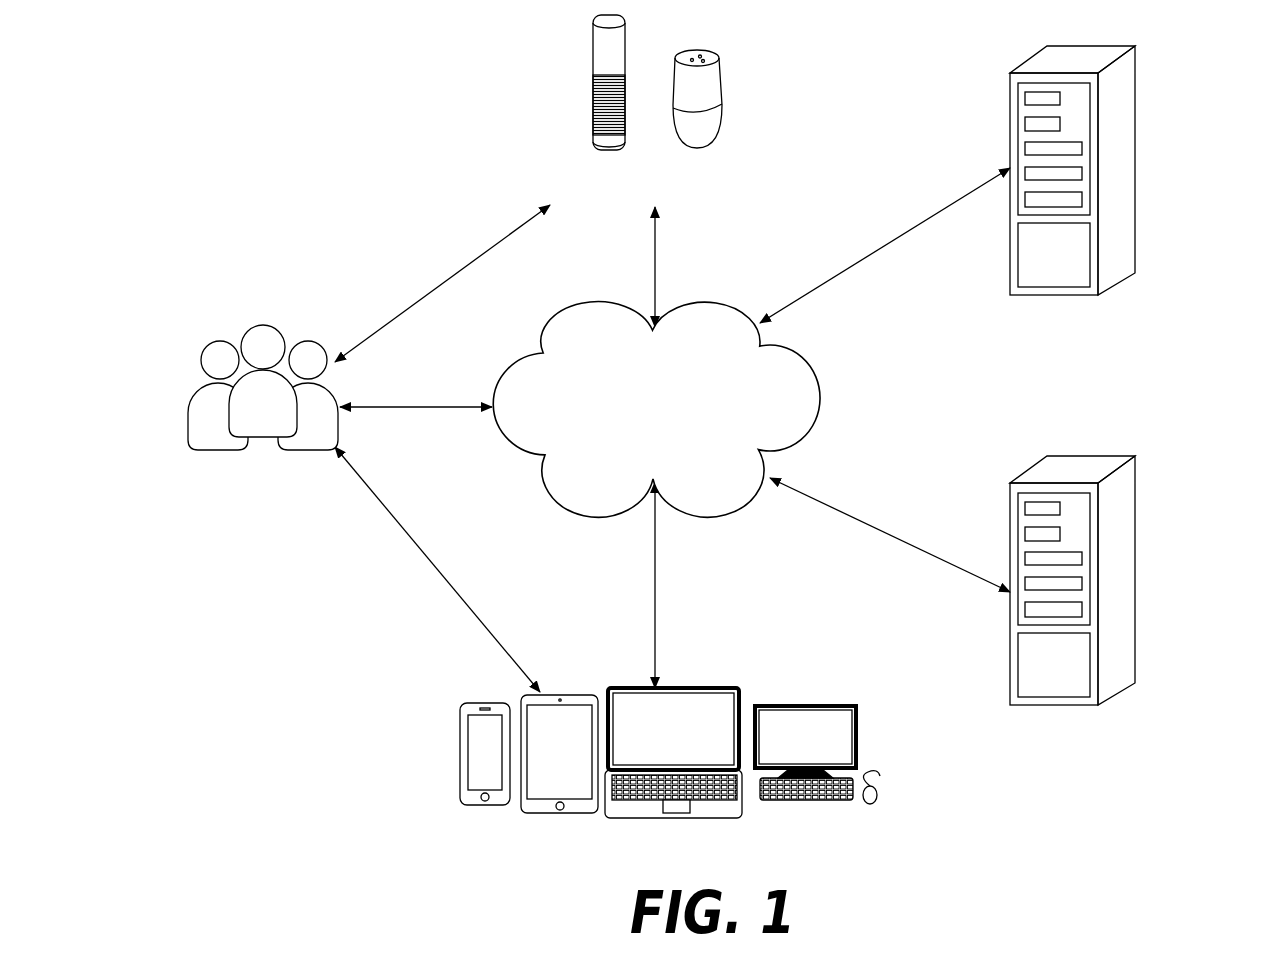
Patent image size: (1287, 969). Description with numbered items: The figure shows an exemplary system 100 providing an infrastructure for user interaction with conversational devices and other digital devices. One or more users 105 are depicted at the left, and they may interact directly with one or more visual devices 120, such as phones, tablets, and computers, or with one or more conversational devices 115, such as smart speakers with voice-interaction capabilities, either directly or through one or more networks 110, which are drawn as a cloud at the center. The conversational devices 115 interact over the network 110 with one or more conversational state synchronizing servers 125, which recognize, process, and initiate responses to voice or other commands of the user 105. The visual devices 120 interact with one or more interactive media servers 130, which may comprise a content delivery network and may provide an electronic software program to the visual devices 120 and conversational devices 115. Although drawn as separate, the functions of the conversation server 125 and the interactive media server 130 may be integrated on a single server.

The system 100 is at (316, 808).
The user 105 is at (213, 453).
The network 110 is at (639, 436).
The conversational devices 115 is at (593, 58).
The visual devices 120 is at (460, 790).
The conversational state synchronizing server 125 is at (1135, 137).
The interactive media server 130 is at (1135, 578).